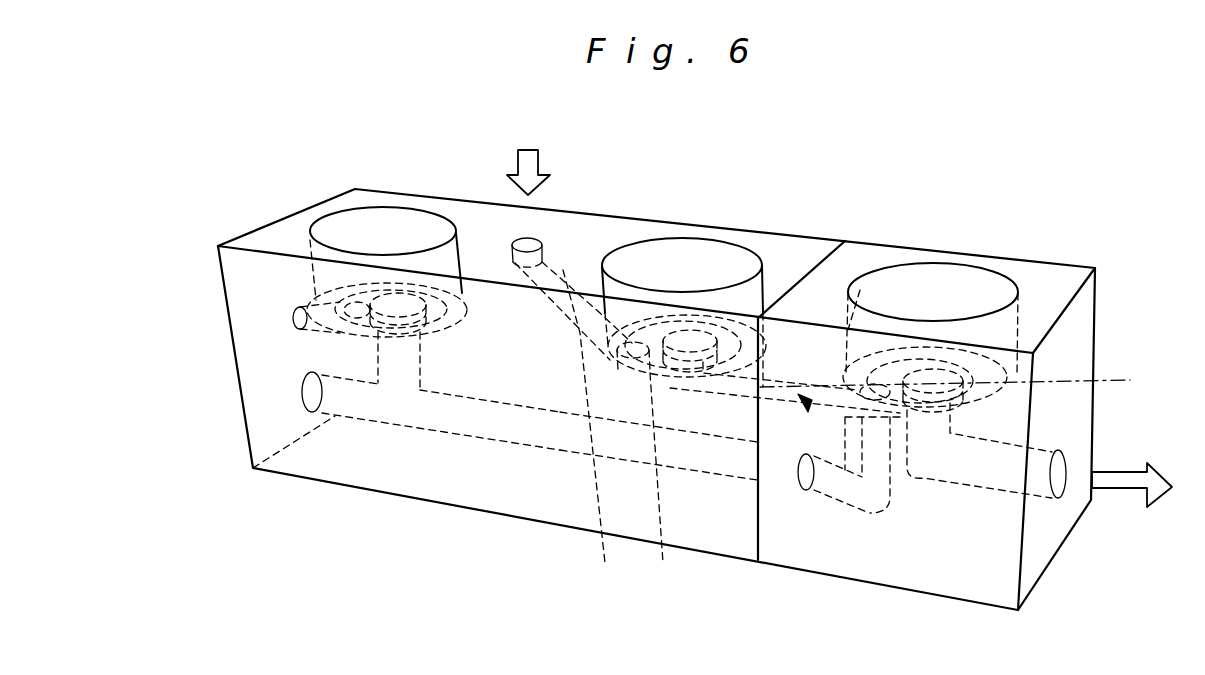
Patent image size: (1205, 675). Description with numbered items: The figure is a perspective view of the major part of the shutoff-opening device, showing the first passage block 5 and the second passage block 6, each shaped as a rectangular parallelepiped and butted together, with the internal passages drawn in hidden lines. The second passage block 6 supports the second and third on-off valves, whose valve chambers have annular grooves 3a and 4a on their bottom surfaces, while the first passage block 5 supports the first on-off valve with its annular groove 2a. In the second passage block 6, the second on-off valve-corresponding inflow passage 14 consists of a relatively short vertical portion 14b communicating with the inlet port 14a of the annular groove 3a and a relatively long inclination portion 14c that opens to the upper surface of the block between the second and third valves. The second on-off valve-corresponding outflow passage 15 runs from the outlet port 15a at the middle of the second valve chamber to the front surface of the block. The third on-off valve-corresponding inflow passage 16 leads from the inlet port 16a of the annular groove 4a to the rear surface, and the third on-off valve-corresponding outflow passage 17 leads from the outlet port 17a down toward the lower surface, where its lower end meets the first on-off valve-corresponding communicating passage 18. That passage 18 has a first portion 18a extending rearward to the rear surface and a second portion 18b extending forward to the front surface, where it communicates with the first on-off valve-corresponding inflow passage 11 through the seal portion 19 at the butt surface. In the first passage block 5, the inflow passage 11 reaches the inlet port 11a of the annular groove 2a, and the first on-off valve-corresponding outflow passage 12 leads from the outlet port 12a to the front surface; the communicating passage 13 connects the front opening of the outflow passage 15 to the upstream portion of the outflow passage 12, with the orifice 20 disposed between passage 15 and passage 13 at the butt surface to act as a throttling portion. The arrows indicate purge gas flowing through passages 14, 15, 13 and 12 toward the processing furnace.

The annular groove 2a is at (963, 374).
The annular groove 3a is at (768, 290).
The annular groove 4a is at (436, 300).
The first passage block 5 is at (875, 584).
The second passage block 6 is at (484, 513).
The first on-off valve-corresponding inflow passage 11 is at (845, 510).
The inlet port 11a is at (937, 378).
The first on-off valve-corresponding outflow passage 12 is at (987, 474).
The outlet port 12a is at (968, 358).
The communicating passage 13 is at (872, 388).
The second on-off valve-corresponding inflow passage 14 is at (605, 563).
The inlet port 14a is at (636, 342).
The vertical portion 14b is at (663, 563).
The inclination portion 14c is at (553, 272).
The second on-off valve-corresponding outflow passage 15 is at (860, 290).
The outlet port 15a is at (690, 340).
The third on-off valve-corresponding inflow passage 16 is at (345, 318).
The inlet port 16a is at (357, 303).
The third on-off valve-corresponding outflow passage 17 is at (396, 360).
The outlet port 17a is at (396, 300).
The first on-off valve-corresponding communicating passage 18 is at (447, 417).
The first portion 18a is at (340, 400).
The second portion 18b is at (535, 430).
The seal portion 19 is at (793, 490).
The orifice 20 is at (800, 412).